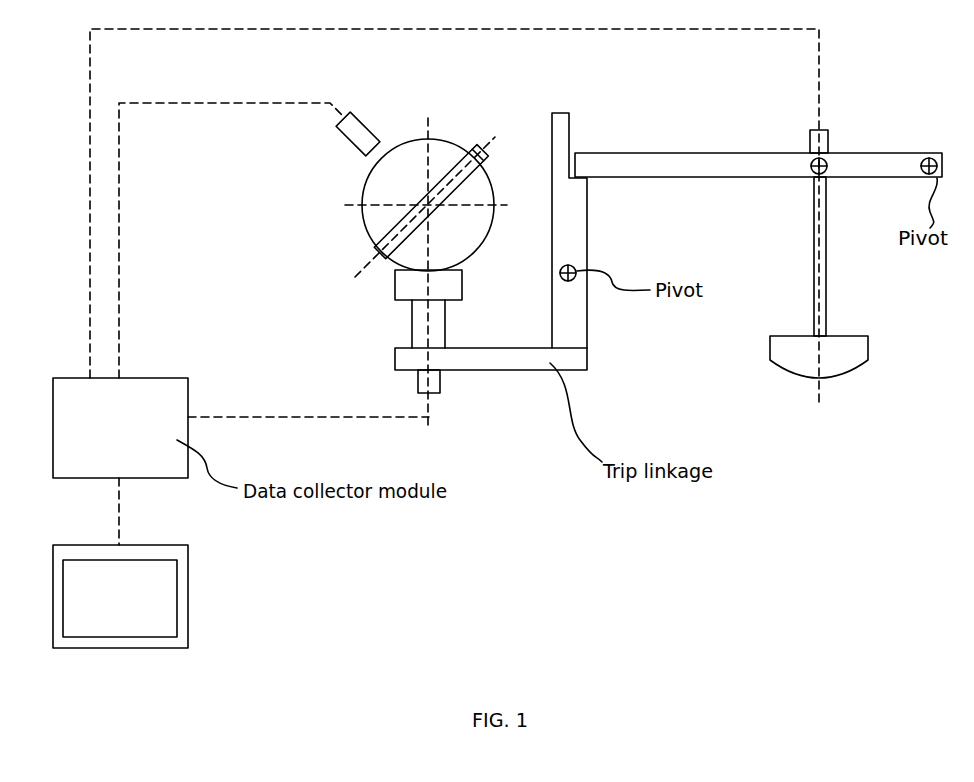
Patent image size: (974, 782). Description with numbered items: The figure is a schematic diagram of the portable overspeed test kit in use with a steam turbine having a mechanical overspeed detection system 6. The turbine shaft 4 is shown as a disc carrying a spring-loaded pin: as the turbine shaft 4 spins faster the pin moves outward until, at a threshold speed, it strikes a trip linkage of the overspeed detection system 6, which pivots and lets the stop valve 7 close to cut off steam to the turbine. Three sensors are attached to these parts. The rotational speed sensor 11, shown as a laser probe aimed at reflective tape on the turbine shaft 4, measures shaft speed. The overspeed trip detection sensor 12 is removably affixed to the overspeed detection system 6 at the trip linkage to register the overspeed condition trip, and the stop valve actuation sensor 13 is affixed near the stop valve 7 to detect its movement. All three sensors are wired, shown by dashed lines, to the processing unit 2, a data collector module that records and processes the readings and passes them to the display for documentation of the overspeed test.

The processing unit 2 is at (152, 600).
The turbine shaft 4 is at (370, 218).
The overspeed detection system 6 is at (472, 150).
The stop valve 7 is at (808, 372).
The rotational speed sensor 11 is at (358, 140).
The overspeed trip detection sensor 12 is at (440, 376).
The stop valve actuation sensor 13 is at (823, 140).